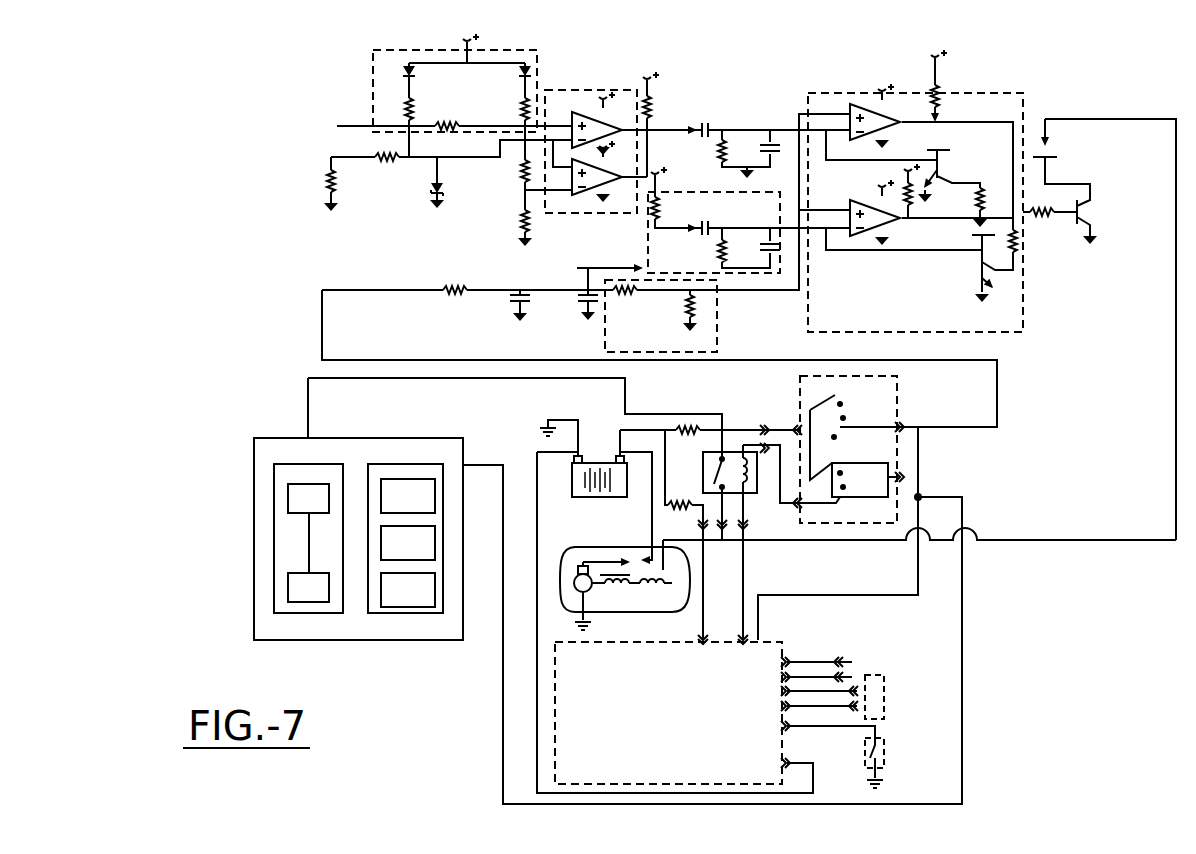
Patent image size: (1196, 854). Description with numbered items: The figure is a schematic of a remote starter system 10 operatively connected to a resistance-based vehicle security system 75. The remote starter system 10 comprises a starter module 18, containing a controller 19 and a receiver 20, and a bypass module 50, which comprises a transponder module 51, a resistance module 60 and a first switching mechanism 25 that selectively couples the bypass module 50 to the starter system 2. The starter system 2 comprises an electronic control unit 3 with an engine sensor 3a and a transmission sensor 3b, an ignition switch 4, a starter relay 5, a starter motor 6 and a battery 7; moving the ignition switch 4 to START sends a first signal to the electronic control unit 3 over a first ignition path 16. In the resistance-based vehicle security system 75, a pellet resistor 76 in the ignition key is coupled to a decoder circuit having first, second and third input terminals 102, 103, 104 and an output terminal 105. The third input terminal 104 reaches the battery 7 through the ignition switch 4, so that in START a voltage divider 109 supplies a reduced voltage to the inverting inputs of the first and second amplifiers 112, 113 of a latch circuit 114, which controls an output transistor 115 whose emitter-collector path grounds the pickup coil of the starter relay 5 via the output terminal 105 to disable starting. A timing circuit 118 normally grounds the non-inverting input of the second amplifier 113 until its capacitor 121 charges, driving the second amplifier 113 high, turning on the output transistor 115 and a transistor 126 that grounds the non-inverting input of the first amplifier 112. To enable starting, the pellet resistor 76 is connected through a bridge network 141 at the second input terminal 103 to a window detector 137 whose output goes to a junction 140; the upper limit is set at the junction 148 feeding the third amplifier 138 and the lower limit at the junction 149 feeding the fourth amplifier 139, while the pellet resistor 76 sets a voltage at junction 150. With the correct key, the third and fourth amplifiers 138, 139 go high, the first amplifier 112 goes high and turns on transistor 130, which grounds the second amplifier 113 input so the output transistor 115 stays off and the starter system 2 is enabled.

The starter system 2 is at (488, 695).
The electronic control unit 3 is at (581, 773).
The engine sensor 3a is at (880, 690).
The transmission sensor 3b is at (880, 755).
The ignition switch 4 is at (800, 392).
The starter relay 5 is at (755, 495).
The starter motor 6 is at (572, 555).
The battery 7 is at (590, 498).
The remote starter system 10 is at (350, 640).
The first ignition path 16 is at (860, 533).
The starter module 18 is at (274, 538).
The controller 19 is at (298, 508).
The receiver 20 is at (298, 597).
The first switching mechanism 25 is at (397, 505).
The bypass module 50 is at (403, 613).
The transponder module 51 is at (397, 599).
The resistance module 60 is at (397, 552).
The resistance-based vehicle security system 75 is at (248, 207).
The pellet resistor 76 is at (336, 180).
The first input terminal 102 is at (337, 126).
The second input terminal 103 is at (367, 157).
The third input terminal 104 is at (372, 291).
The output terminal 105 is at (1048, 132).
The voltage divider 109 is at (596, 334).
The first amplifier 112 is at (855, 106).
The second amplifier 113 is at (866, 205).
The latch circuit 114 is at (946, 191).
The output transistor 115 is at (1074, 220).
The timing circuit 118 is at (592, 292).
The capacitor 121 is at (770, 268).
The transistor 126 is at (946, 181).
The transistor 130 is at (980, 272).
The window detector 137 is at (629, 122).
The third amplifier 138 is at (598, 120).
The fourth amplifier 139 is at (699, 249).
The junction 140 is at (658, 131).
The bridge network 141 is at (362, 70).
The junction 148 is at (533, 108).
The junction 149 is at (523, 192).
The junction 150 is at (437, 162).